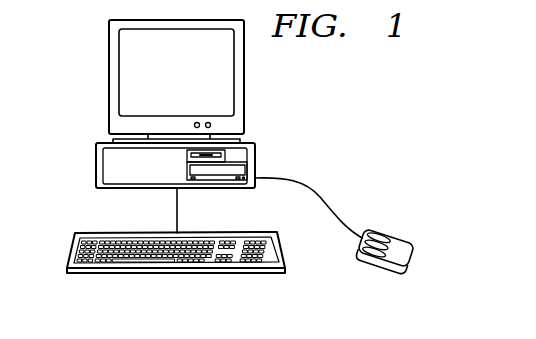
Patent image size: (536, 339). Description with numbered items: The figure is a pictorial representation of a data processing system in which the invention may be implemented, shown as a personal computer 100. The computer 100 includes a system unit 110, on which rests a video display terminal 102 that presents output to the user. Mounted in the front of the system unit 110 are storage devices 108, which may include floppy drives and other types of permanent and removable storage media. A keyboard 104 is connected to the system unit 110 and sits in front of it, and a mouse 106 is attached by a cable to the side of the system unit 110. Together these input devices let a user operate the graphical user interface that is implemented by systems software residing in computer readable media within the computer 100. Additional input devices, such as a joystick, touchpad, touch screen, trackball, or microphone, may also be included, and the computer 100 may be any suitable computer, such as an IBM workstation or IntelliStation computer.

The computer 100 is at (284, 102).
The video display terminal 102 is at (108, 77).
The keyboard 104 is at (72, 252).
The mouse 106 is at (398, 241).
The storage devices 108 is at (256, 174).
The system unit 110 is at (96, 167).